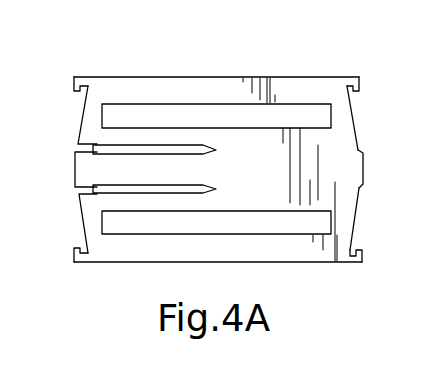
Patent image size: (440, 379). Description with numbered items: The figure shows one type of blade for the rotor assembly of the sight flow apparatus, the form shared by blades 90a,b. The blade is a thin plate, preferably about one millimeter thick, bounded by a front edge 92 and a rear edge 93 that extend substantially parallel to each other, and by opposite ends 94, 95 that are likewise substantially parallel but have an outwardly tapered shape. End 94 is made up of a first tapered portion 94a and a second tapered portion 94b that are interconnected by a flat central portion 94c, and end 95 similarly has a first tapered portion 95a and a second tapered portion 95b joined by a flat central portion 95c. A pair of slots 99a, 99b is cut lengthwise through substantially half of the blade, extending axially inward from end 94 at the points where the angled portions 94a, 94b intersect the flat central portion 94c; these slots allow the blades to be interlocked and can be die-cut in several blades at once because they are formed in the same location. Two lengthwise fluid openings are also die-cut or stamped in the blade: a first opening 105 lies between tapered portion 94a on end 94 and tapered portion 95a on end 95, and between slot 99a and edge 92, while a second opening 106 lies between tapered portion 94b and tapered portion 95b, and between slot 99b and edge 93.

The blades 90a,b is at (292, 68).
The front edge 92 is at (168, 76).
The rear edge 93 is at (180, 263).
The end 94 is at (80, 138).
The first tapered portion 94a is at (81, 115).
The second tapered portion 94b is at (83, 216).
The flat central portion 94c is at (76, 153).
The end 95 is at (353, 123).
The first tapered portion 95a is at (355, 137).
The second tapered portion 95b is at (353, 220).
The flat central portion 95c is at (361, 163).
The slot 99a is at (137, 153).
The slot 99b is at (150, 195).
The first opening 105 is at (319, 114).
The second opening 106 is at (302, 228).